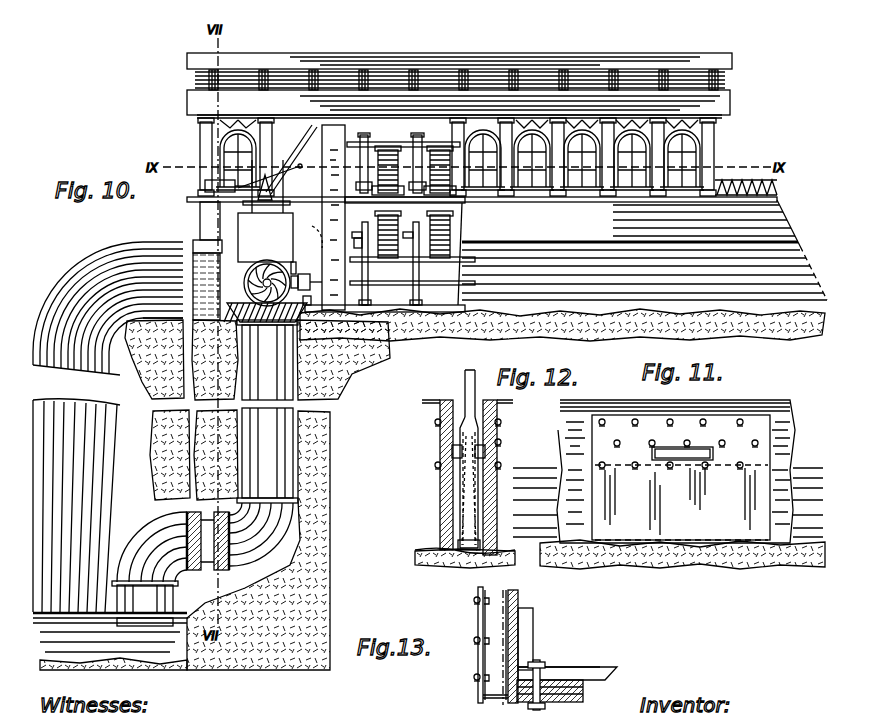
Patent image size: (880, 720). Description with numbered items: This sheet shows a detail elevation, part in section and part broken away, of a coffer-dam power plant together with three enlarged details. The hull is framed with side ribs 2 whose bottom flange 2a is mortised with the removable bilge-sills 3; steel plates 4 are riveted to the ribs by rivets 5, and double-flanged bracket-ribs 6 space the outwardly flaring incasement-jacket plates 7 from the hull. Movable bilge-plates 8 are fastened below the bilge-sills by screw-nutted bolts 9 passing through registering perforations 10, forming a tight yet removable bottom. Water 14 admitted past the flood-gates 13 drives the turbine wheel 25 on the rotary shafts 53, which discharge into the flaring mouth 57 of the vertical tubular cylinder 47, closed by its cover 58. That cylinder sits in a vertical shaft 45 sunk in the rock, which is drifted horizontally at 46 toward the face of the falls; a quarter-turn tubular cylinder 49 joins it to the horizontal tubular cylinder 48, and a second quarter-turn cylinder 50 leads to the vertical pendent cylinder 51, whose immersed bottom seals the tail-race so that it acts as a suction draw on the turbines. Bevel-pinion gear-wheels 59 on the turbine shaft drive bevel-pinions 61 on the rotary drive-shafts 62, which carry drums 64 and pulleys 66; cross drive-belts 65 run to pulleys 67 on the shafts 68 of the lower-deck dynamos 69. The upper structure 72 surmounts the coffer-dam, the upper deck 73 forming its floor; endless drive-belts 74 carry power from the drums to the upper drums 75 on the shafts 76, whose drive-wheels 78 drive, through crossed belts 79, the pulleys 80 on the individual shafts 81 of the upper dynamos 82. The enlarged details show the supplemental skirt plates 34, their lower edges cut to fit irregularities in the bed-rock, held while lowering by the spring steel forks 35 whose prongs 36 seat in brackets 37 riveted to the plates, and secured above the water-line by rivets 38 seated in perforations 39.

In FIG. 10, the side ribs 2 is at (227, 187).
In FIG. 13, the side ribs 2 is at (525, 640).
In FIG. 13, the bottom flange of side ribs 2a is at (578, 668).
In FIG. 13, the bilge sills 3 is at (574, 670).
In FIG. 10, the steel plates 4 is at (644, 250).
In FIG. 12, the steel plates 4 is at (497, 533).
In FIG. 11, the steel plates 4 is at (676, 471).
In FIG. 13, the steel plates 4 is at (518, 598).
In FIG. 13, the rivets 5 is at (476, 677).
In FIG. 13, the double-flanged bracket-ribs 6 is at (495, 707).
In FIG. 10, the incasement-jacket plates 7 is at (482, 140).
In FIG. 13, the incasement-jacket plates 7 is at (478, 653).
In FIG. 13, the bilge-plates 8 is at (583, 698).
In FIG. 13, the screw-nutted bolts 9 is at (539, 679).
In FIG. 13, the perforations 10 is at (546, 668).
In FIG. 10, the flood-gates 13 is at (265, 237).
In FIG. 10, the water 14 is at (429, 436).
In FIG. 12, the water 14 is at (531, 502).
In FIG. 11, the water 14 is at (681, 502).
In FIG. 10, the turbine wheel 25 is at (267, 274).
In FIG. 12, the skirt plates 34 is at (467, 554).
In FIG. 11, the skirt plates 34 is at (682, 492).
In FIG. 12, the steel forks 35 is at (465, 378).
In FIG. 12, the prongs 36 is at (469, 482).
In FIG. 12, the brackets 37 is at (468, 493).
In FIG. 11, the brackets 37 is at (682, 445).
In FIG. 12, the rivets 38 is at (435, 466).
In FIG. 11, the rivets 38 is at (671, 444).
In FIG. 12, the perforations 39 is at (452, 452).
In FIG. 11, the perforations 39 is at (725, 444).
In FIG. 10, the vertical shaft 45 is at (215, 360).
In FIG. 10, the horizontal drift 46 is at (170, 462).
In FIG. 10, the vertical tubular cylinder 47 is at (267, 414).
In FIG. 10, the horizontal tubular cylinder 48 is at (208, 541).
In FIG. 10, the quarter-turn tubular cylinder 49 is at (261, 534).
In FIG. 10, the second quarter-turn tubular cylinder 50 is at (152, 547).
In FIG. 10, the vertical pendent tubular cylinder 51 is at (145, 603).
In FIG. 10, the rotary shafts 53 is at (270, 176).
In FIG. 10, the flaring mouth 57 is at (264, 305).
In FIG. 10, the cover 58 is at (274, 307).
In FIG. 10, the bevel-pinion gear-wheels 59 is at (290, 262).
In FIG. 10, the bevel-pinions 61 is at (302, 274).
In FIG. 10, the rotary drive-shafts 62 is at (386, 280).
In FIG. 10, the drums 64 is at (357, 234).
In FIG. 10, the cross drive-belts 65 is at (412, 268).
In FIG. 10, the pulleys 66 is at (385, 307).
In FIG. 10, the pulleys 67 is at (354, 240).
In FIG. 10, the dynamo shafts 68 is at (397, 260).
In FIG. 10, the dynamos 69 is at (422, 232).
In FIG. 10, the upper structure 72 is at (432, 160).
In FIG. 10, the upper deck 73 is at (279, 186).
In FIG. 10, the endless drive-belts 74 is at (333, 217).
In FIG. 10, the upper drums 75 is at (290, 134).
In FIG. 10, the upper shafts 76 is at (294, 160).
In FIG. 10, the drive-wheels 78 is at (403, 161).
In FIG. 10, the belts 79 is at (384, 174).
In FIG. 10, the pulleys 80 is at (386, 181).
In FIG. 10, the dynamo shafts 81 is at (411, 180).
In FIG. 10, the dynamos 82 is at (414, 169).